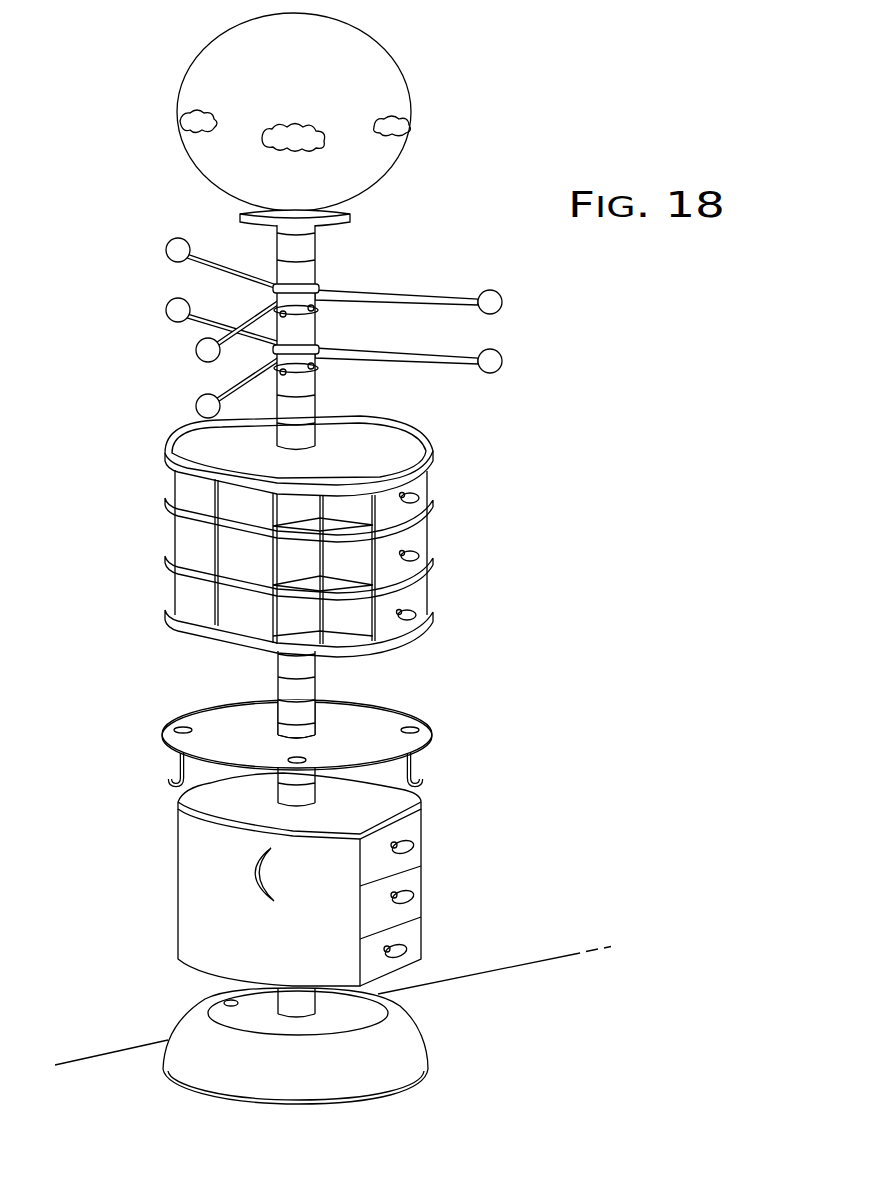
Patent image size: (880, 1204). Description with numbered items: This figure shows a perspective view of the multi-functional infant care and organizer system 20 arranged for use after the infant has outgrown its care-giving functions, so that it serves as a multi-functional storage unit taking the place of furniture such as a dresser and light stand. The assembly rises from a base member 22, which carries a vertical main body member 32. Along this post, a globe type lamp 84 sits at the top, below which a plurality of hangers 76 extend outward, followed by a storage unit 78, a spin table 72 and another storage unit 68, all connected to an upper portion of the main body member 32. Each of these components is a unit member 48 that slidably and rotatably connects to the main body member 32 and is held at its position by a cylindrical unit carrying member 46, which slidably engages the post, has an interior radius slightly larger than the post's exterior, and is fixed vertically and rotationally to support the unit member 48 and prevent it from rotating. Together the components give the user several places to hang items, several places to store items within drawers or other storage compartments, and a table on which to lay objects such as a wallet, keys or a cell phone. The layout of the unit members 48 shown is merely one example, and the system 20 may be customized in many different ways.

The multi-functional infant care and organizer system 20 is at (630, 435).
The base member 22 is at (430, 1038).
The main body member 32 is at (295, 621).
The unit carrying member 46 is at (318, 328).
The unit member 48 is at (165, 244).
The storage unit 68 is at (165, 882).
The spin table 72 is at (405, 702).
The hangers 76 is at (420, 287).
The storage unit 78 is at (438, 448).
The globe type lamp 84 is at (415, 70).